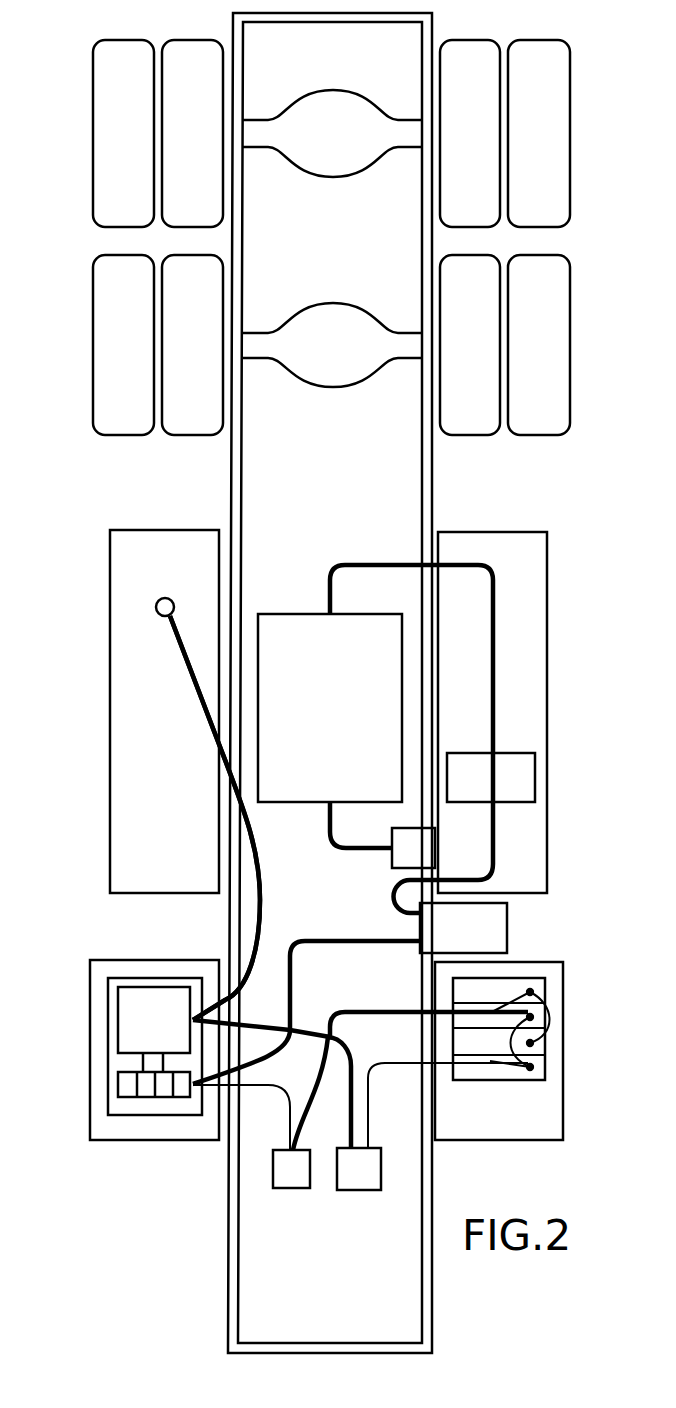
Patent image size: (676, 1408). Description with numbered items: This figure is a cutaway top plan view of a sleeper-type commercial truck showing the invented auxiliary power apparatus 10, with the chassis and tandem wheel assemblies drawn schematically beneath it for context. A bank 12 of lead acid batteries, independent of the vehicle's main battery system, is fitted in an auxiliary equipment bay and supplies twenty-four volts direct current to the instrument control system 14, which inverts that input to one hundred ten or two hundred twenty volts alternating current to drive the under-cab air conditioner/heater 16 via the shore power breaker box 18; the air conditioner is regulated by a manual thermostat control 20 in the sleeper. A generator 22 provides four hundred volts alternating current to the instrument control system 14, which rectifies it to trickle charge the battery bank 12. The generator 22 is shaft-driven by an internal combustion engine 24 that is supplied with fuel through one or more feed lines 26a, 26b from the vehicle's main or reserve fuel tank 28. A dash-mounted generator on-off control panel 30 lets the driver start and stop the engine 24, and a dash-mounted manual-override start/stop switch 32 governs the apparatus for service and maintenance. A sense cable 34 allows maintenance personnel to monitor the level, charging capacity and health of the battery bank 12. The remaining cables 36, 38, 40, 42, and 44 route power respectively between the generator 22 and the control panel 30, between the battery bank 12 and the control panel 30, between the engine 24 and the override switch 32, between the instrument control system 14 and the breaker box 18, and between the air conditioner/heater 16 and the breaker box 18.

The apparatus 10 is at (57, 499).
The bank of lead acid batteries 12 is at (547, 1068).
The instrument control system 14 is at (476, 939).
The under-cab air conditioner/heater 16 is at (343, 716).
The shore power breaker box 18 is at (505, 789).
The manual thermostat control 20 is at (392, 860).
The generator 22 is at (117, 1085).
The internal combustion engine 24 is at (168, 1031).
The feed line 26a is at (253, 925).
The feed line 26b is at (253, 925).
The fuel tank 28 is at (180, 743).
The generator on-off control panel 30 is at (290, 1190).
The manual-override start/stop switch 32 is at (355, 1192).
The sense cable 34 is at (395, 1067).
The cable 36 is at (265, 1090).
The cable 38 is at (382, 1010).
The cable 40 is at (313, 1027).
The cable 42 is at (392, 903).
The cable 44 is at (386, 565).